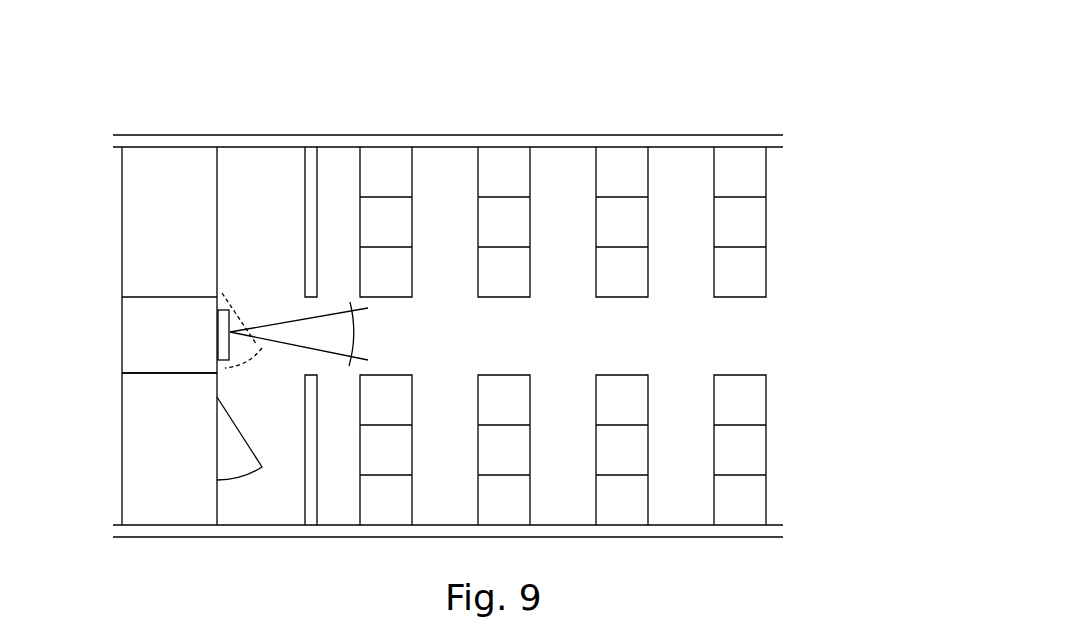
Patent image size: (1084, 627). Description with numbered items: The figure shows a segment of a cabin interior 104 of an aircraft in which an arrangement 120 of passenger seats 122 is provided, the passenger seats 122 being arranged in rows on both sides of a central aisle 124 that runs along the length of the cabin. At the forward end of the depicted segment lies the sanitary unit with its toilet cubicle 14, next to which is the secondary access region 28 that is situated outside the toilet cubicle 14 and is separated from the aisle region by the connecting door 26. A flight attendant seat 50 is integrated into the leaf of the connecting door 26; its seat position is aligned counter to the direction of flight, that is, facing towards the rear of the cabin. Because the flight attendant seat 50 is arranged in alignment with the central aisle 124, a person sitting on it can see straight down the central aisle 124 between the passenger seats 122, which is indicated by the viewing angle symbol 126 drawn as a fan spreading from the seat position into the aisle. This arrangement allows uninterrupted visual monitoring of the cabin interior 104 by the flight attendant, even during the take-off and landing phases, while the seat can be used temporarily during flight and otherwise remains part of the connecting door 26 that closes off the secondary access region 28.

The cabin interior 104 is at (800, 243).
The arrangement of passenger seats 120 is at (591, 128).
The passenger seat 122 is at (414, 163).
The central aisle 124 is at (532, 339).
The viewing angle symbol 126 is at (290, 320).
The connecting door 26 is at (216, 320).
The secondary access region 28 is at (188, 352).
The toilet cubicle 14 is at (186, 458).
The flight attendant seat 50 is at (238, 343).